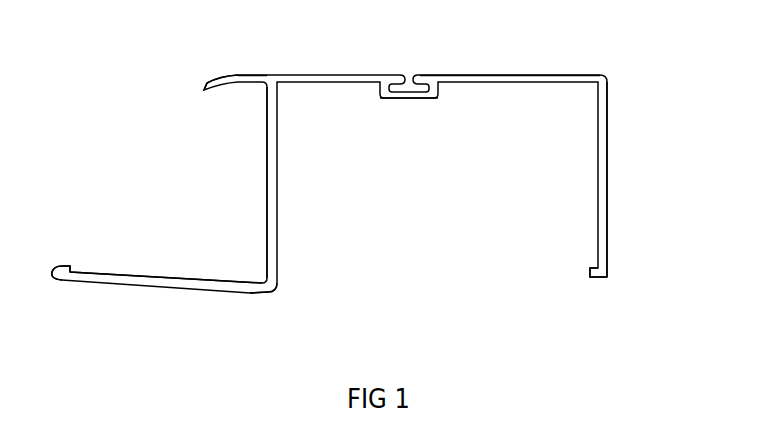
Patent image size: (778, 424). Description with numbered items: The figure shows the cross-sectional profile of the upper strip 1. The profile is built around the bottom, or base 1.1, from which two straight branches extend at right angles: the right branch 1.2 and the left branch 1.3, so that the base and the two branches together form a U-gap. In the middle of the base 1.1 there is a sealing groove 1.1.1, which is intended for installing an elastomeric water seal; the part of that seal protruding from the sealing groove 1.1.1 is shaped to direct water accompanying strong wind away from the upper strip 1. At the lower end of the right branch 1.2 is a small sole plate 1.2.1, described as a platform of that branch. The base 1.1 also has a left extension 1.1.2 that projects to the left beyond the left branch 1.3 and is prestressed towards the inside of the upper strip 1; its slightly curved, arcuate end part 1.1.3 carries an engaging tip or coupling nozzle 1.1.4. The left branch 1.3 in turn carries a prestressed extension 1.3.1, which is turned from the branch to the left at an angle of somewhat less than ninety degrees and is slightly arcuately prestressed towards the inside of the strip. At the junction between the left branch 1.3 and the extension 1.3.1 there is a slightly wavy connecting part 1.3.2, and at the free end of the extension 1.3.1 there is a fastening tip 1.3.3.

The upper strip 1 is at (625, 60).
The base of strip 1.1 is at (508, 75).
The sealing groove 1.1.1 is at (409, 76).
The left extension of the base 1.1.2 is at (243, 75).
The arcuate end part 1.1.3 is at (213, 78).
The engaging tip 1.1.4 is at (202, 88).
The right branch 1.2 is at (608, 165).
The sole plate 1.2.1 is at (603, 278).
The left branch 1.3 is at (266, 183).
The prestressed extension of the left branch 1.3.1 is at (123, 287).
The wavy connecting part 1.3.2 is at (257, 293).
The fastening tip 1.3.3 is at (68, 266).